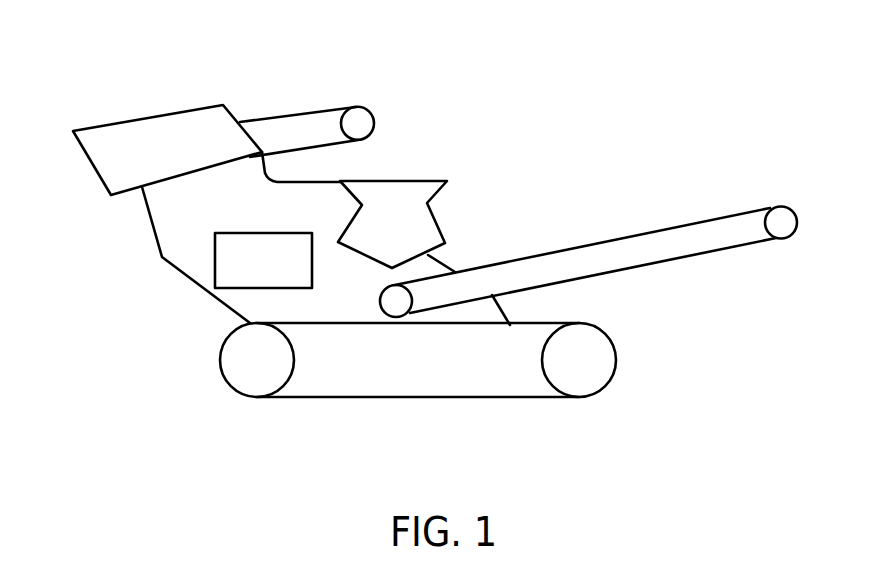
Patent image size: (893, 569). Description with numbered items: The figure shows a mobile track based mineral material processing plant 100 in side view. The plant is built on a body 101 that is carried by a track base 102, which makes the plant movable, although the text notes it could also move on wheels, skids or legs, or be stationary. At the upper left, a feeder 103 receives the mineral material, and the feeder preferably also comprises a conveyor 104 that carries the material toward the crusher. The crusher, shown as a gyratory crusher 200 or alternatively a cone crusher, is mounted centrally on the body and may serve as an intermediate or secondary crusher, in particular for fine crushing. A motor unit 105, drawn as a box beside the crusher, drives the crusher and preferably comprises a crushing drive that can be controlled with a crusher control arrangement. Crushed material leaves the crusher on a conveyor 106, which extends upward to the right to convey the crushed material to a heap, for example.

The mobile track based mineral material processing plant 100 is at (618, 44).
The body 101 is at (182, 270).
The track base 102 is at (520, 397).
The feeder 103 is at (80, 152).
The conveyor 104 is at (280, 150).
The motor unit 105 is at (262, 240).
The conveyor 106 is at (742, 210).
The gyratory crusher 200 is at (435, 180).